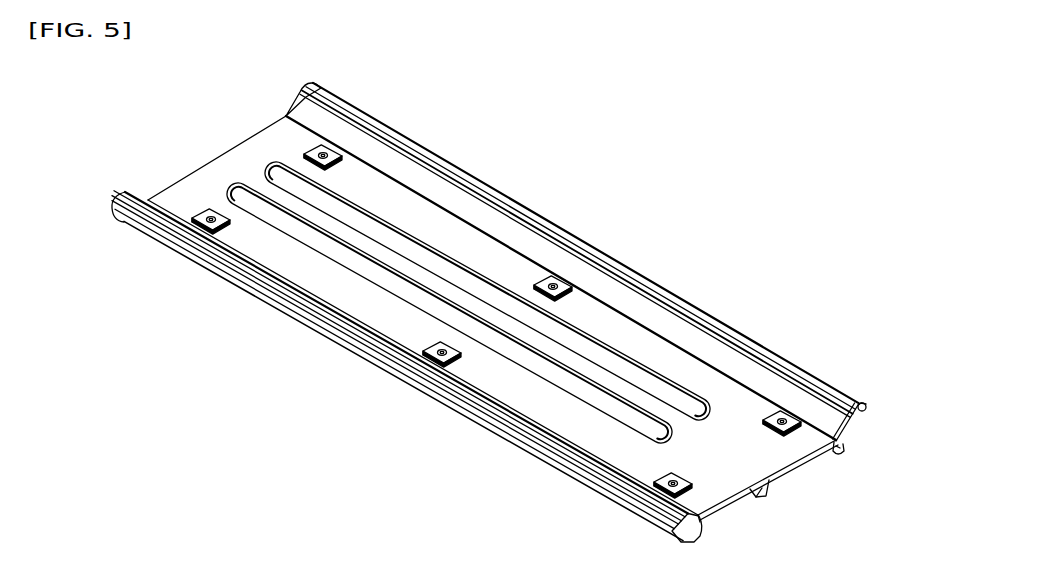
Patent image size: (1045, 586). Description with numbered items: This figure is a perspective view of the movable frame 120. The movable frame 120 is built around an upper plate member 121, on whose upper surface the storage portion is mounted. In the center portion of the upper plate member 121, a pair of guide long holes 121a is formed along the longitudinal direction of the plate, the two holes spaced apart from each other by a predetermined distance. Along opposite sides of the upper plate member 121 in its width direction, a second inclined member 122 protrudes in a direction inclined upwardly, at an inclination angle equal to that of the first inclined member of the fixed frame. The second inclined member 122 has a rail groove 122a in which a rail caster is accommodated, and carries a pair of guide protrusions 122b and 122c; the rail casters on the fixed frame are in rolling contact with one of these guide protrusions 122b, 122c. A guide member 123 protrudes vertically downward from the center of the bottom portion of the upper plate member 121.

The movable frame 120 is at (622, 143).
The upper plate member 121 is at (720, 490).
The guide long hole 121a is at (548, 378).
The second inclined member 122 is at (805, 398).
The rail groove 122a is at (849, 427).
The guide protrusion 122b is at (866, 402).
The guide protrusion 122c is at (843, 451).
The guide member 123 is at (768, 491).